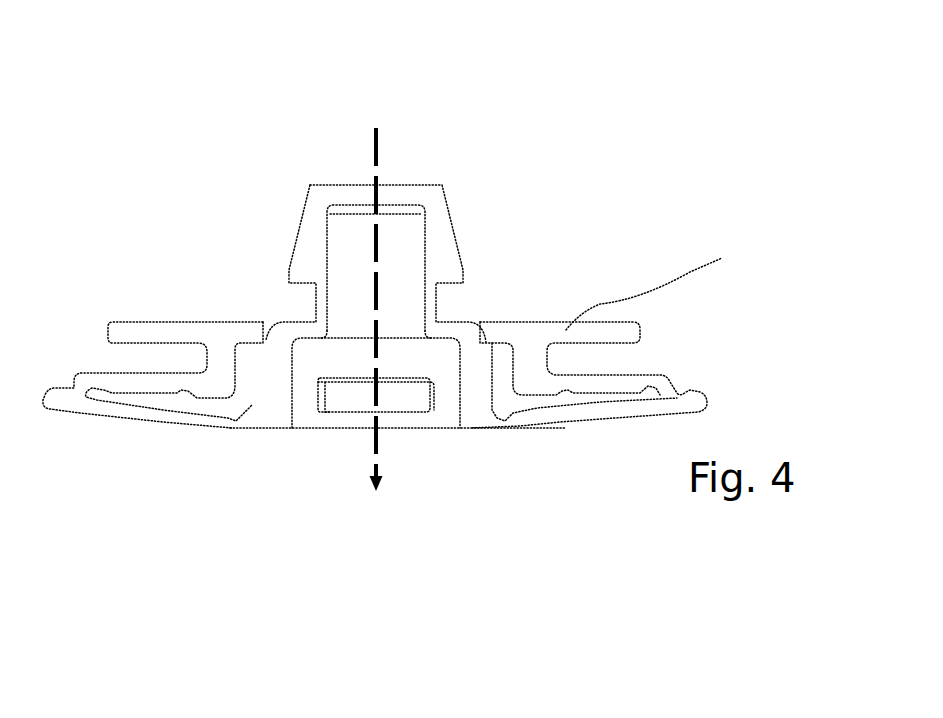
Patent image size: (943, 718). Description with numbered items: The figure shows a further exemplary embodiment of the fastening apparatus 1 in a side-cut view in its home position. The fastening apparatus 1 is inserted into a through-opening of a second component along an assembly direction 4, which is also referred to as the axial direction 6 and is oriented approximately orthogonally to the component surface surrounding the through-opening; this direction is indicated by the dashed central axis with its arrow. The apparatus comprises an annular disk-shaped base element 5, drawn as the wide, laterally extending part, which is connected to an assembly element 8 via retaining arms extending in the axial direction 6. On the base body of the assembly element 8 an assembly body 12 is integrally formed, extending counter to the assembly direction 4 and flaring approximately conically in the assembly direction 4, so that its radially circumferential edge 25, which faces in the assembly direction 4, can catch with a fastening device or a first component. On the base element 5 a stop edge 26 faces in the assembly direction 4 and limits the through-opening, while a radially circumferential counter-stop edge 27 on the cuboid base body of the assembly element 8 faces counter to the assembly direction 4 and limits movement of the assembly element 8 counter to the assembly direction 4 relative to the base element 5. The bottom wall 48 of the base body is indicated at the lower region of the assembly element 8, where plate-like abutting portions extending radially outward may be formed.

The fastening apparatus 1 is at (740, 70).
The assembly direction 4 is at (324, 309).
The axial direction 6 is at (375, 143).
The assembly body 12 is at (423, 200).
The radially circumferential edge 25 is at (462, 281).
The stop edge 26 is at (259, 338).
The base element 5 is at (655, 283).
The counter-stop edge 27 is at (262, 347).
The assembly element 8 is at (274, 362).
The bottom wall 48 is at (483, 418).